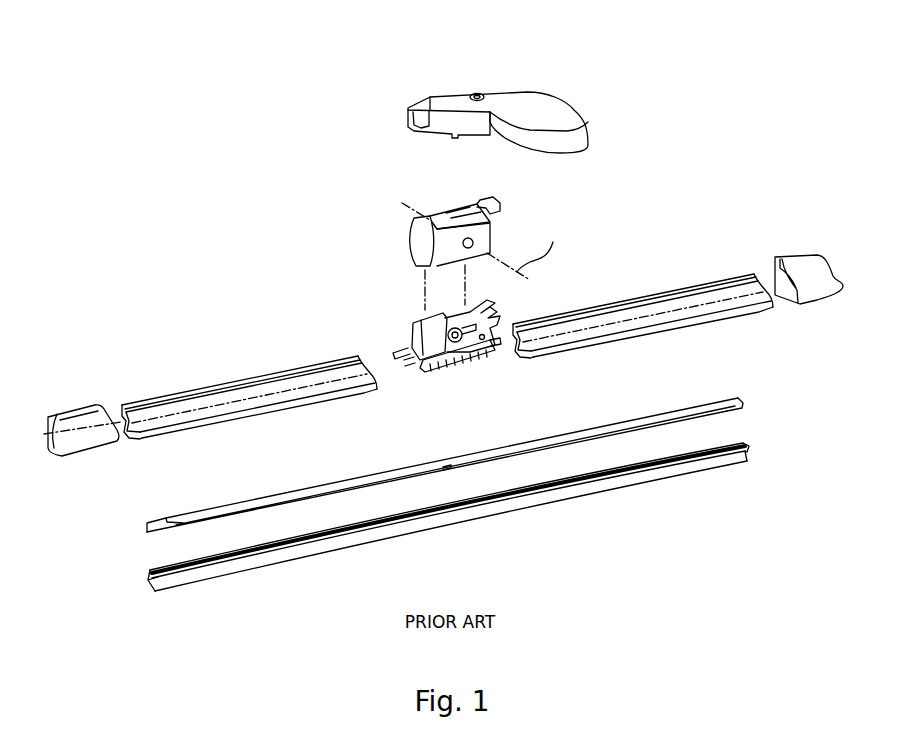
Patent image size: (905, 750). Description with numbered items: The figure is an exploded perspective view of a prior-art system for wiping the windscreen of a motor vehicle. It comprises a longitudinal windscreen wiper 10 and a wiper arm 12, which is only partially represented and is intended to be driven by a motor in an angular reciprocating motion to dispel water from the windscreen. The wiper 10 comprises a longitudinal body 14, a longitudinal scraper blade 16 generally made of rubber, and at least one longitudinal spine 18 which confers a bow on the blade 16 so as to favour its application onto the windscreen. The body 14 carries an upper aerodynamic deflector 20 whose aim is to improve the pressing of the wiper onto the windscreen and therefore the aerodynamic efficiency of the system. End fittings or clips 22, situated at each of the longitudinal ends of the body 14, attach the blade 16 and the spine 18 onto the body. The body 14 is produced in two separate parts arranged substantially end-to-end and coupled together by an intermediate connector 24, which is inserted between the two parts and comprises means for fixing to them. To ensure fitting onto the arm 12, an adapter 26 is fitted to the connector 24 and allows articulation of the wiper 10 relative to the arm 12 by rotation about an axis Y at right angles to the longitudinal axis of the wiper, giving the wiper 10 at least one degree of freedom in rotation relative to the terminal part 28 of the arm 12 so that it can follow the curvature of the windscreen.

The windscreen wiper 10 is at (630, 156).
The wiper arm 12 is at (443, 102).
The longitudinal body 14 is at (223, 382).
The longitudinal scraper blade 16 is at (592, 500).
The longitudinal spine 18 is at (361, 472).
The upper aerodynamic deflector 20 is at (677, 291).
The end fittings or clips 22 is at (80, 396).
The intermediate connector 24 is at (409, 339).
The adapter 26 is at (416, 240).
The terminal part 28 is at (478, 93).